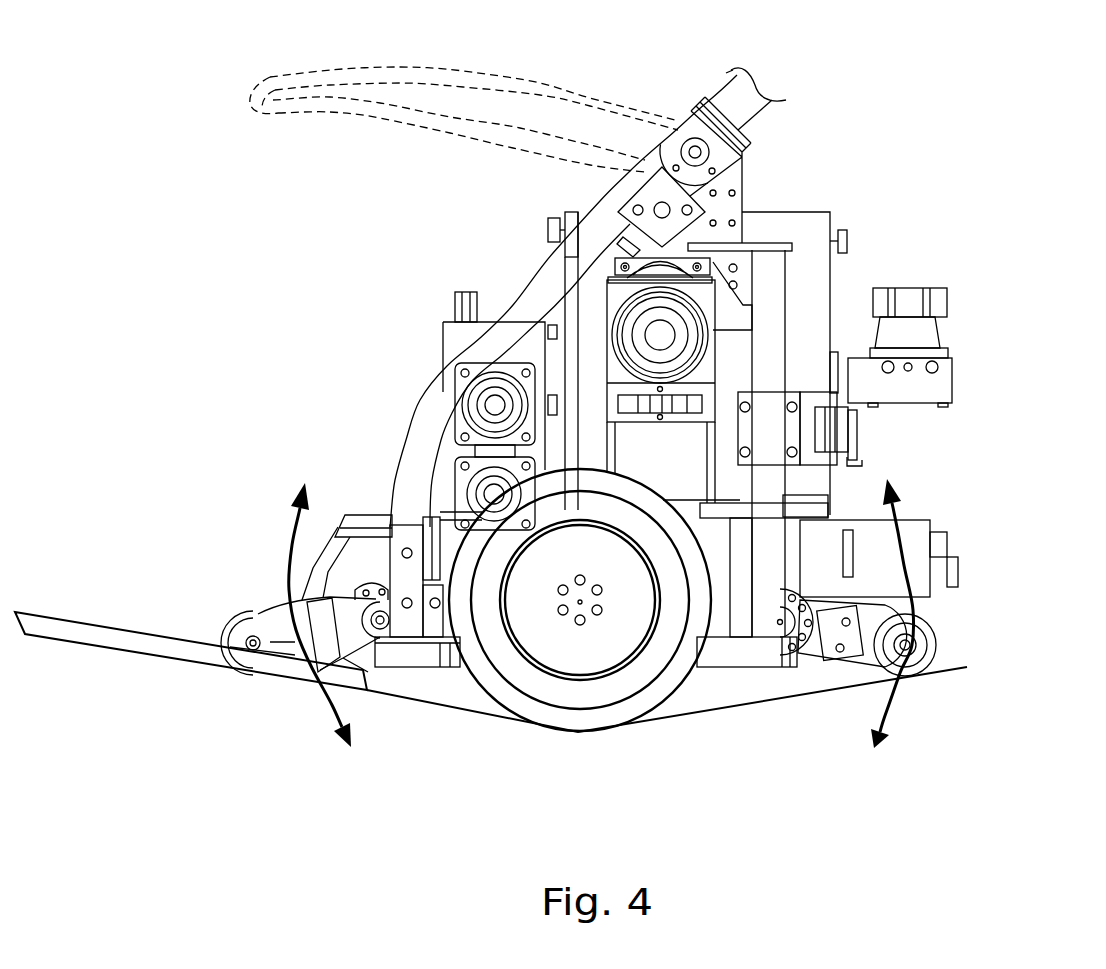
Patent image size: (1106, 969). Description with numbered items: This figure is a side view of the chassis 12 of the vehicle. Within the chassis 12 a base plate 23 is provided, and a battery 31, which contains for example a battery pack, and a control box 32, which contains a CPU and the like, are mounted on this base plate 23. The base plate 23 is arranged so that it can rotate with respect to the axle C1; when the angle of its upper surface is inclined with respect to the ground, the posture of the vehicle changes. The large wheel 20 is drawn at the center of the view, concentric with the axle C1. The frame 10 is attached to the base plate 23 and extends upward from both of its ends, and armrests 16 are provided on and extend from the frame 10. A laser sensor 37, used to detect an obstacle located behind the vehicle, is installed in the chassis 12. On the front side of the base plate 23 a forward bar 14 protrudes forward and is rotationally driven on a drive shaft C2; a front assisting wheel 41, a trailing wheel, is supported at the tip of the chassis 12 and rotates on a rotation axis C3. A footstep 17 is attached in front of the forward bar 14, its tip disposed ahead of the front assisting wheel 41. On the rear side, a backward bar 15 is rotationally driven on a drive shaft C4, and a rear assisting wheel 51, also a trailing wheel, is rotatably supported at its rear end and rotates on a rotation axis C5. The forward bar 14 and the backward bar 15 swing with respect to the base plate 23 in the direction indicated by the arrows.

The frame 10 is at (753, 97).
The chassis 12 is at (1000, 344).
The forward bar 14 is at (328, 648).
The backward bar 15 is at (880, 633).
The armrests 16 is at (327, 70).
The footstep 17 is at (55, 625).
The drive wheel 20 is at (589, 710).
The base plate 23 is at (750, 660).
The battery 31 is at (452, 336).
The control box 32 is at (613, 307).
The laser sensor 37 is at (945, 335).
The front assisting wheel 41 is at (243, 617).
The rear assisting wheel 51 is at (935, 645).
The axle C1 is at (578, 605).
The drive shaft C2 is at (381, 618).
The rotation axis C3 is at (254, 648).
The drive shaft C4 is at (782, 630).
The rotation axis C5 is at (906, 652).